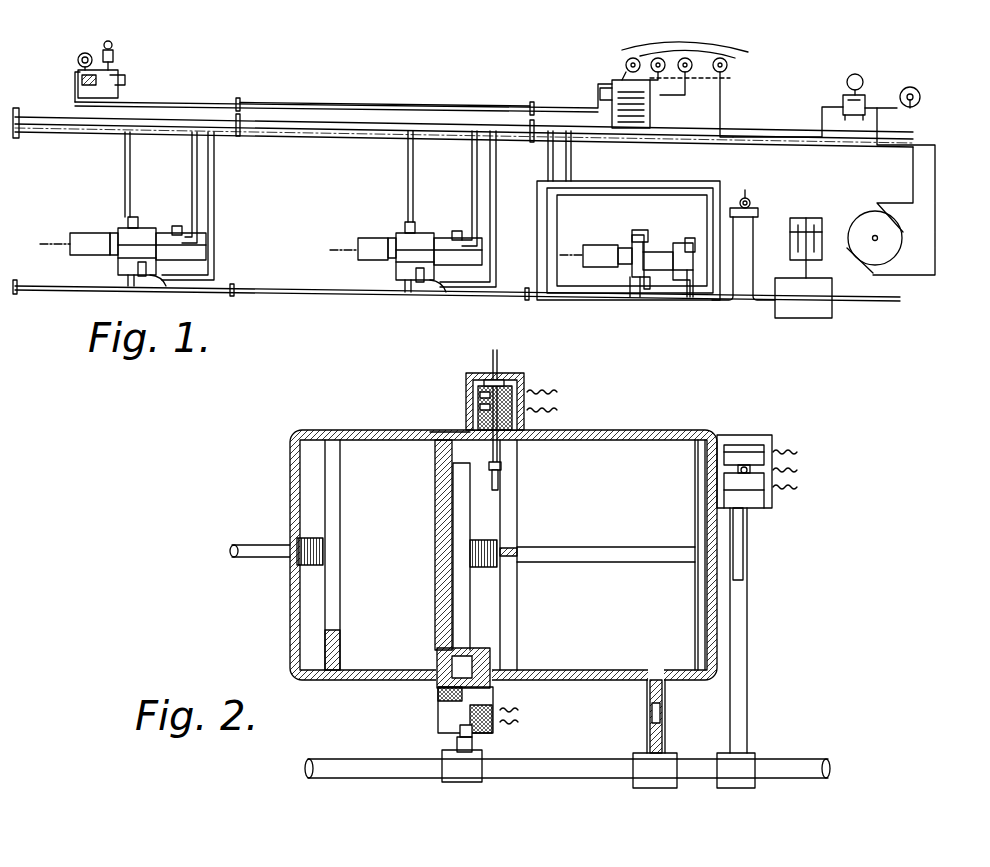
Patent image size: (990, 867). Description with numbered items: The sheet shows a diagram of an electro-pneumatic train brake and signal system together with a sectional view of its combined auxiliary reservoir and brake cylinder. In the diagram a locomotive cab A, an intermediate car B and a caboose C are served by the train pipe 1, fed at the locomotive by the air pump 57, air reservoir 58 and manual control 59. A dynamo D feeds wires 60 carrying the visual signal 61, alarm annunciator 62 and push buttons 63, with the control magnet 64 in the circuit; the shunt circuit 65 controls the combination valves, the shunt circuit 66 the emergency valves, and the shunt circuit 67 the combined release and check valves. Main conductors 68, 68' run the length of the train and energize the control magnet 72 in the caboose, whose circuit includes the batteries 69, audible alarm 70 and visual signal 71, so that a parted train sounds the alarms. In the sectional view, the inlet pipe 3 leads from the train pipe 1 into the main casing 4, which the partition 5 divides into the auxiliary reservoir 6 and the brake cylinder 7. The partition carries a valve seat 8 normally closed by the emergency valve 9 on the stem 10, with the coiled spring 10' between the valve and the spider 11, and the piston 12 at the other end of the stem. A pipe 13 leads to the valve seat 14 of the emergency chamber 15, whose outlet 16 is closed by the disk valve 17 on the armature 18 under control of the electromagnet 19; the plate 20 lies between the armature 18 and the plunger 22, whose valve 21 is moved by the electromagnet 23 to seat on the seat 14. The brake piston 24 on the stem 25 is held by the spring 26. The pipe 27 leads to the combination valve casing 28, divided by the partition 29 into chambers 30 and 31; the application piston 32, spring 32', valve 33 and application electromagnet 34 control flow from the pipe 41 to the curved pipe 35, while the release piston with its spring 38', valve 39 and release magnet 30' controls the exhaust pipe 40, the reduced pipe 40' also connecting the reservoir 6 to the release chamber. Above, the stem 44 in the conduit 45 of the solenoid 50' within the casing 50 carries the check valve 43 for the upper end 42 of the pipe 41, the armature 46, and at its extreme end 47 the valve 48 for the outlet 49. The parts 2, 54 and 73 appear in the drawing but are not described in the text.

In FIG. 1, the train pipe 1 is at (545, 300).
In FIG. 2, the train pipe 1 is at (368, 775).
In FIG. 2, the tee fitting 2 is at (660, 770).
In FIG. 1, the check valved non-return inlet pipe 3 is at (688, 298).
In FIG. 2, the check valved non-return inlet pipe 3 is at (647, 710).
In FIG. 1, the main casing or reservoir 4 is at (648, 240).
In FIG. 2, the main casing or reservoir 4 is at (560, 690).
In FIG. 2, the diaphragm or partition 5 is at (438, 690).
In FIG. 1, the auxiliary reservoir compartment 6 is at (665, 252).
In FIG. 2, the auxiliary reservoir compartment 6 is at (602, 621).
In FIG. 1, the brake cylinder compartment 7 is at (583, 250).
In FIG. 2, the brake cylinder compartment 7 is at (435, 640).
In FIG. 2, the valve seat 8 is at (435, 480).
In FIG. 2, the emergency valve 9 is at (453, 520).
In FIG. 1, the stem 10 is at (414, 236).
In FIG. 2, the stem 10 is at (606, 543).
In FIG. 2, the coiled spring 10' is at (535, 477).
In FIG. 2, the supporting or guiding spider 11 is at (512, 540).
In FIG. 1, the emergency check valve operating piston 12 is at (206, 250).
In FIG. 2, the emergency check valve operating piston 12 is at (695, 518).
In FIG. 1, the conduit or pipe 13 is at (166, 287).
In FIG. 2, the conduit or pipe 13 is at (748, 594).
In FIG. 1, the valve seat portion 14 is at (182, 231).
In FIG. 2, the valve seat portion 14 is at (750, 515).
In FIG. 2, the emergency chamber 15 is at (772, 500).
In FIG. 2, the valve controlled outlet 16 is at (735, 435).
In FIG. 2, the disk valve 17 is at (750, 445).
In FIG. 2, the armature 18 is at (765, 445).
In FIG. 2, the electromagnet or solenoid 19 is at (715, 435).
In FIG. 2, the plate or armature 20 is at (797, 452).
In FIG. 2, the valve 21 is at (745, 540).
In FIG. 2, the plunger 22 is at (797, 487).
In FIG. 2, the electromagnet 23 is at (797, 470).
In FIG. 1, the brake operating piston 24 is at (118, 255).
In FIG. 2, the brake operating piston 24 is at (340, 595).
In FIG. 1, the brake operating plunger or stem 25 is at (70, 238).
In FIG. 2, the brake operating plunger or stem 25 is at (262, 545).
In FIG. 2, the coiled or helical spring 26 is at (318, 538).
In FIG. 1, the pipe 27 is at (128, 286).
In FIG. 2, the pipe 27 is at (482, 770).
In FIG. 1, the combination valve casing 28 is at (612, 267).
In FIG. 2, the combination valve casing 28 is at (440, 725).
In FIG. 2, the partition 29 is at (520, 710).
In FIG. 2, the chamber 30 is at (410, 714).
In FIG. 2, the release magnet 30' is at (443, 739).
In FIG. 2, the chamber 31 is at (493, 692).
In FIG. 2, the application piston 32 is at (541, 729).
In FIG. 2, the spring 32' is at (496, 739).
In FIG. 2, the valve 33 is at (492, 680).
In FIG. 1, the application electromagnet 34 is at (142, 276).
In FIG. 2, the application electromagnet 34 is at (492, 733).
In FIG. 2, the curved pipe 35 is at (492, 668).
In FIG. 2, the spring 38' is at (408, 701).
In FIG. 2, the valve 39 is at (452, 656).
In FIG. 2, the exhaust pipe 40 is at (395, 653).
In FIG. 2, the reduced pipe or conduit 40' is at (520, 621).
In FIG. 1, the pipe or conduit 41 is at (134, 217).
In FIG. 2, the pipe or conduit 41 is at (490, 660).
In FIG. 2, the upper end of pipe 42 is at (470, 470).
In FIG. 2, the check valve 43 is at (500, 476).
In FIG. 2, the stem 44 is at (502, 466).
In FIG. 2, the conduit 45 is at (520, 432).
In FIG. 2, the armature 46 is at (524, 378).
In FIG. 2, the extreme end of stem 47 is at (500, 375).
In FIG. 2, the valve 48 is at (495, 360).
In FIG. 2, the valve seated outlet 49 is at (486, 380).
In FIG. 2, the casing 50 is at (456, 385).
In FIG. 2, the electromagnet or solenoid 50' is at (455, 403).
In FIG. 2, the bracket 54 is at (455, 436).
In FIG. 1, the air pump 57 is at (810, 218).
In FIG. 1, the air reservoir 58 is at (832, 298).
In FIG. 1, the manual control 59 is at (752, 205).
In FIG. 1, the wires 60 is at (936, 190).
In FIG. 1, the visual signal 61 is at (921, 100).
In FIG. 1, the alarm annunciator 62 is at (866, 90).
In FIG. 1, the push buttons or switches 63 is at (735, 68).
In FIG. 1, the control magnet 64 is at (612, 92).
In FIG. 1, the shunt circuit 65 is at (216, 198).
In FIG. 1, the shunt circuit 66 is at (125, 140).
In FIG. 1, the shunt circuit 67 is at (131, 150).
In FIG. 1, the main conductor wire 68 is at (343, 92).
In FIG. 1, the main conductor wire 68' is at (385, 90).
In FIG. 1, the batteries 69 is at (126, 82).
In FIG. 1, the audible alarm 70 is at (114, 54).
In FIG. 1, the visual signal 71 is at (80, 56).
In FIG. 1, the control magnet 72 is at (78, 78).
In FIG. 1, the pipe 73 is at (75, 100).
In FIG. 1, the locomotive cab A is at (787, 99).
In FIG. 1, the intermediate car B is at (391, 83).
In FIG. 1, the caboose C is at (79, 189).
In FIG. 1, the dynamo D is at (903, 247).